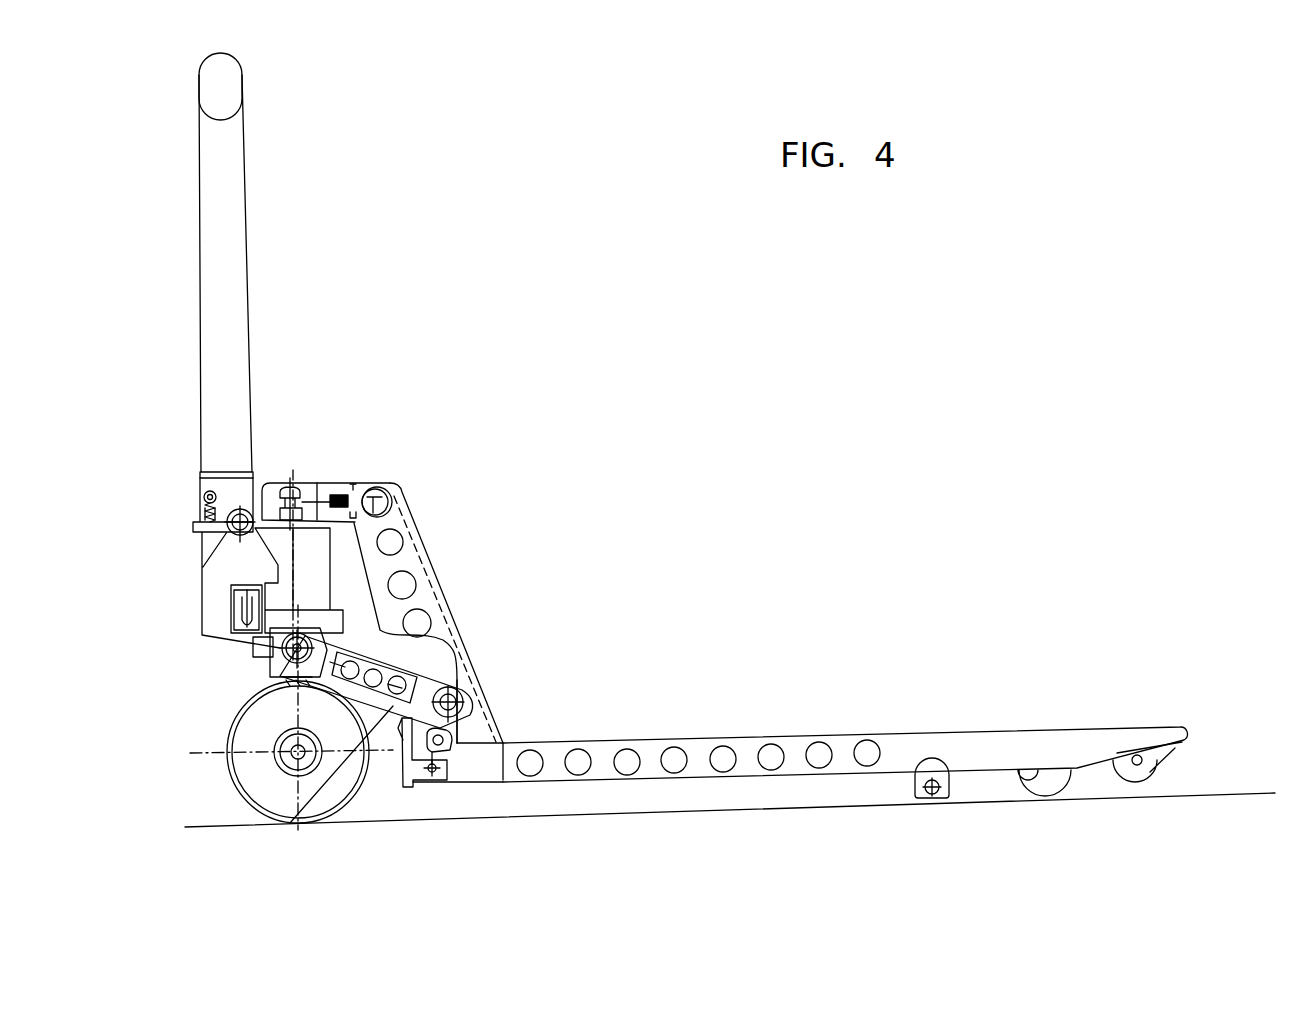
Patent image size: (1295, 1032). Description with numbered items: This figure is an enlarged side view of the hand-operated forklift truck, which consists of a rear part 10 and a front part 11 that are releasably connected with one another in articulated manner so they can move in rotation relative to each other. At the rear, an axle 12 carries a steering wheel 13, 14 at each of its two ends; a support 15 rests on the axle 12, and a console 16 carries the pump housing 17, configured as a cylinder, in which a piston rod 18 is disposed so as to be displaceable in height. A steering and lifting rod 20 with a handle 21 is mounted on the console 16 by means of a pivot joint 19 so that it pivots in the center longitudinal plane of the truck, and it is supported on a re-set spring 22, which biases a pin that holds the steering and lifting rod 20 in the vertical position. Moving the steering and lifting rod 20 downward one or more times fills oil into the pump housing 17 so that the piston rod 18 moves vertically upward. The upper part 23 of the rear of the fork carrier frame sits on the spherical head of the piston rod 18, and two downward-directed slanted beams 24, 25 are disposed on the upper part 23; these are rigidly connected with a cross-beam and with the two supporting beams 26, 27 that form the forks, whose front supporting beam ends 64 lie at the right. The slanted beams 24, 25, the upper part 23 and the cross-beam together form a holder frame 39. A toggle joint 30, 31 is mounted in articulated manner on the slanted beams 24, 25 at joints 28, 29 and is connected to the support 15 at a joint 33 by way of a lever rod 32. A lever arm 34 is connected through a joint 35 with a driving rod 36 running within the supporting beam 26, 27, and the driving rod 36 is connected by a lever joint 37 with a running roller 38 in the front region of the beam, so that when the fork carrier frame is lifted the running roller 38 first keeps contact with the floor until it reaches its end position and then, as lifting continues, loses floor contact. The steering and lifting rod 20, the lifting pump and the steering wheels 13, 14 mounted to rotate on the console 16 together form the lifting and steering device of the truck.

The rear part 10 is at (186, 567).
The front part 11 is at (763, 720).
The axle 12 is at (280, 760).
The steering wheel 13 is at (236, 717).
The steering wheel 14 is at (233, 722).
The support 15 is at (293, 675).
The console 16 is at (317, 618).
The pump housing 17 is at (333, 580).
The piston rod 18 is at (332, 503).
The pivot joint 19 is at (235, 516).
The steering and lifting rod 20 is at (233, 285).
The handle 21 is at (242, 87).
The re-set spring 22 is at (207, 505).
The upper part 23 is at (320, 478).
The slanted beam 24 is at (517, 631).
The slanted beam 25 is at (455, 597).
The supporting beam 26 is at (845, 785).
The supporting beam 27 is at (692, 782).
The joint 28 is at (526, 696).
The joint 29 is at (468, 693).
The toggle joint 30 is at (367, 791).
The toggle joint 31 is at (402, 718).
The lever rod 32 is at (290, 823).
The joint 33 is at (297, 635).
The lever arm 34 is at (463, 738).
The joint 35 is at (432, 776).
The driving rod 36 is at (480, 768).
The lever joint 37 is at (950, 777).
The running roller 38 is at (1038, 785).
The holder frame 39 is at (492, 672).
The supporting beam end 64 is at (1173, 730).